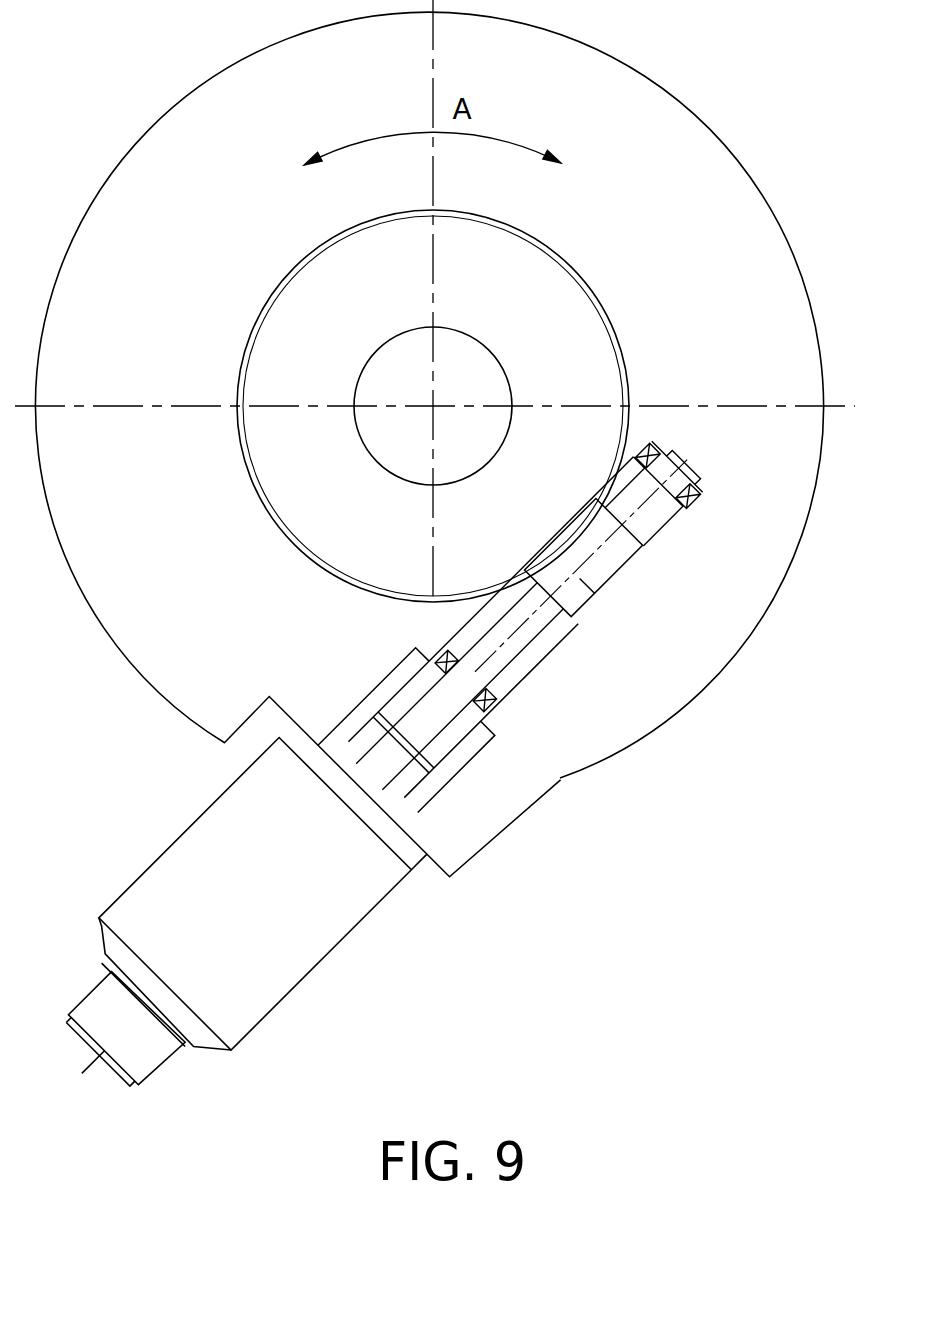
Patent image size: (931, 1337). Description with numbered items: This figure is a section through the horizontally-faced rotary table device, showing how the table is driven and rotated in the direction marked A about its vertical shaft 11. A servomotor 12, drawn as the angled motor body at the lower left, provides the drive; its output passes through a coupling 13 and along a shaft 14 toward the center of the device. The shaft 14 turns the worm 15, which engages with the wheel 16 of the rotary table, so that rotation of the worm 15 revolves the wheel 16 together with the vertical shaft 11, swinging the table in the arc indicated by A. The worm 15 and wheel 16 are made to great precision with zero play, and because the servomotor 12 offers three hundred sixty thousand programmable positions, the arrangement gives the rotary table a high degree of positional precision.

The vertical shaft 11 is at (433, 388).
The servomotor 12 is at (262, 977).
The coupling 13 is at (405, 782).
The shaft 14 is at (497, 660).
The worm 15 is at (578, 578).
The wheel 16 is at (585, 391).